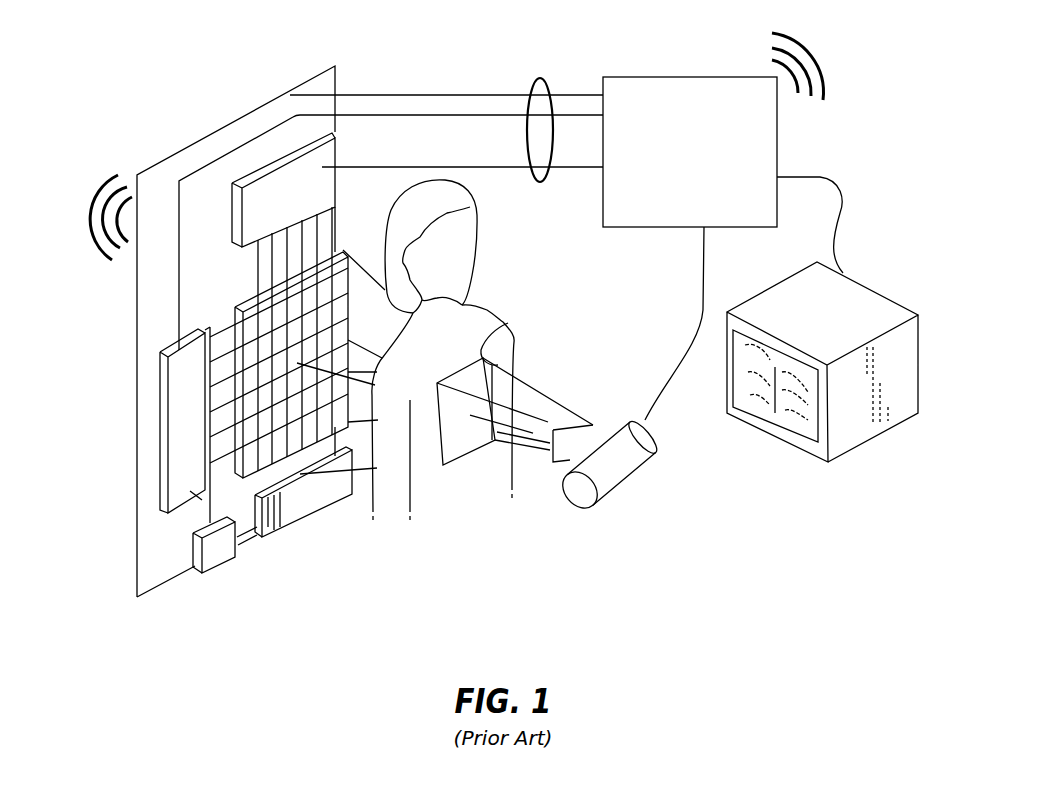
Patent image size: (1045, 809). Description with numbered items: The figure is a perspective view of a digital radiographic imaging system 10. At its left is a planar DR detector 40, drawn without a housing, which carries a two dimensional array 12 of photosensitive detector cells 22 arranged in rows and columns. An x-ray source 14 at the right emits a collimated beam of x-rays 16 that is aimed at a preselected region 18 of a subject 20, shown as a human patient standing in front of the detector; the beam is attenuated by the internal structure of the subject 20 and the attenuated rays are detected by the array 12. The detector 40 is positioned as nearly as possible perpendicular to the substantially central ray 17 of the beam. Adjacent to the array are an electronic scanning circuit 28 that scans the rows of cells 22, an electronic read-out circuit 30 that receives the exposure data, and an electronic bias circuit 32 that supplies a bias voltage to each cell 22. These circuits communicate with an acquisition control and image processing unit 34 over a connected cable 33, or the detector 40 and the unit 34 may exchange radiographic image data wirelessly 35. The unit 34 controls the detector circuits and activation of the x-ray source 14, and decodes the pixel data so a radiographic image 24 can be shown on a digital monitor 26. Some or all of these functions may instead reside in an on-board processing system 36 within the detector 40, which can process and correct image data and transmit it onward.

The digital radiographic imaging system 10 is at (881, 145).
The two dimensional array 12 is at (341, 238).
The x-ray source 14 is at (643, 457).
The x-rays 16 is at (535, 395).
The central ray 17 is at (530, 415).
The preselected region 18 is at (503, 320).
The subject 20 is at (488, 294).
The detector cells 22 is at (265, 305).
The radiographic image 24 is at (782, 417).
The digital monitor 26 is at (868, 308).
The electronic scanning circuit 28 is at (202, 500).
The electronic read-out circuit 30 is at (267, 188).
The electronic bias circuit 32 is at (297, 513).
The connected cable 33 is at (537, 78).
The acquisition control and image processing unit 34 is at (777, 127).
The wireless transmission 35 is at (87, 232).
The on-board processing system 36 is at (218, 553).
The DR detector 40 is at (127, 148).